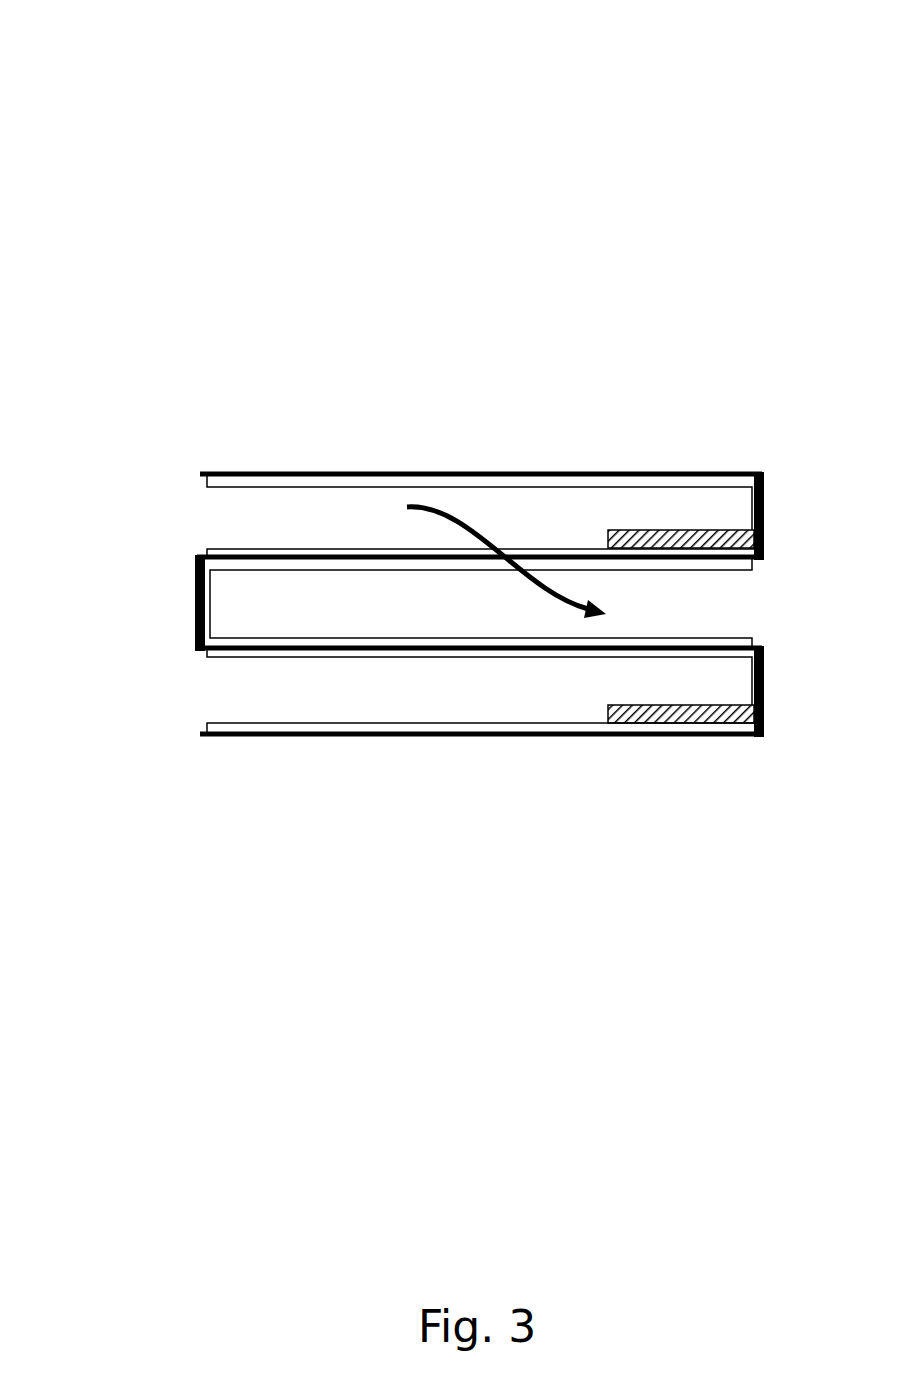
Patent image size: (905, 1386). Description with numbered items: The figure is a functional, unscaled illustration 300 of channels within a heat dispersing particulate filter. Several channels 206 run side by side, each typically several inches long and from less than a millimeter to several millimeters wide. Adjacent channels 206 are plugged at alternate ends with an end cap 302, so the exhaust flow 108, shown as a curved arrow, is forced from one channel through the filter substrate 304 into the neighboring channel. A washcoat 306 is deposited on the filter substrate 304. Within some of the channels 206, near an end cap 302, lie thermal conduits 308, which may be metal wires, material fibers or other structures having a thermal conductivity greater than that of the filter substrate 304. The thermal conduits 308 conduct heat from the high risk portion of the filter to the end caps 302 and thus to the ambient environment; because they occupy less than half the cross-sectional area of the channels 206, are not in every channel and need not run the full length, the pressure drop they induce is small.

The battery module assembly 300 is at (78, 62).
The exhaust flow 108 is at (421, 505).
The channels 206 is at (278, 520).
The end cap 302 is at (764, 511).
The filter substrate 304 is at (567, 473).
The washcoat 306 is at (617, 486).
The thermal conduits 308 is at (690, 530).